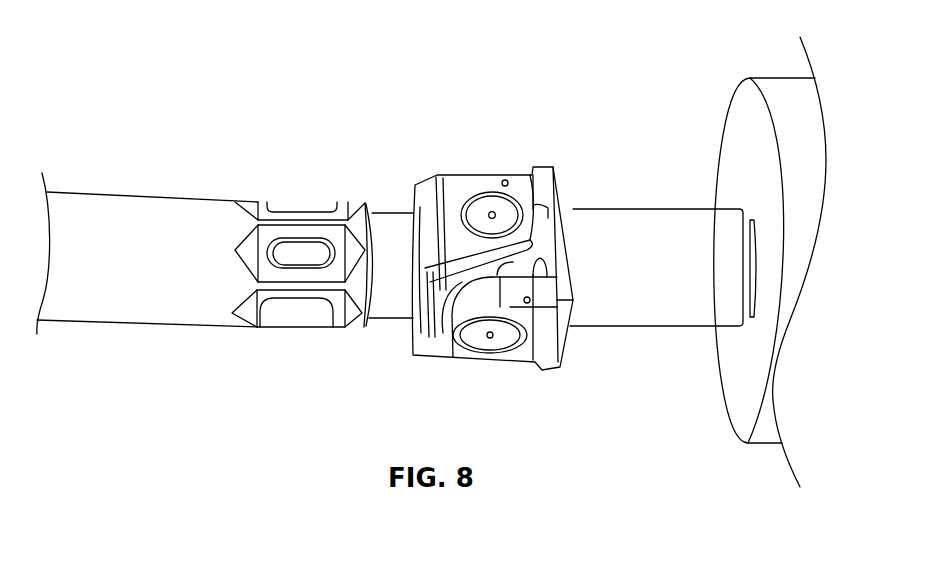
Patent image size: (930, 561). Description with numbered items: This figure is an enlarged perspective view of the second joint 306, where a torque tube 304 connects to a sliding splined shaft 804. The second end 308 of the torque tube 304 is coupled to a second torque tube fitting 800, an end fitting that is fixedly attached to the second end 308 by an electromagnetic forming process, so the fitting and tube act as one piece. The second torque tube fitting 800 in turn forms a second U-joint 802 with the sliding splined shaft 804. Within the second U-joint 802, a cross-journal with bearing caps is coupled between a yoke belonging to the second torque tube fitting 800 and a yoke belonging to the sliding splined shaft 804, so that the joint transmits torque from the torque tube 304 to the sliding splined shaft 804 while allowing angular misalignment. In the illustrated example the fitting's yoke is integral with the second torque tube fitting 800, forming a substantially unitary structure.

The torque tube 304 is at (105, 207).
The second joint 306 is at (426, 85).
The second end 308 is at (364, 222).
The second torque tube fitting 800 is at (388, 307).
The second U-joint 802 is at (501, 149).
The sliding splined shaft 804 is at (625, 225).